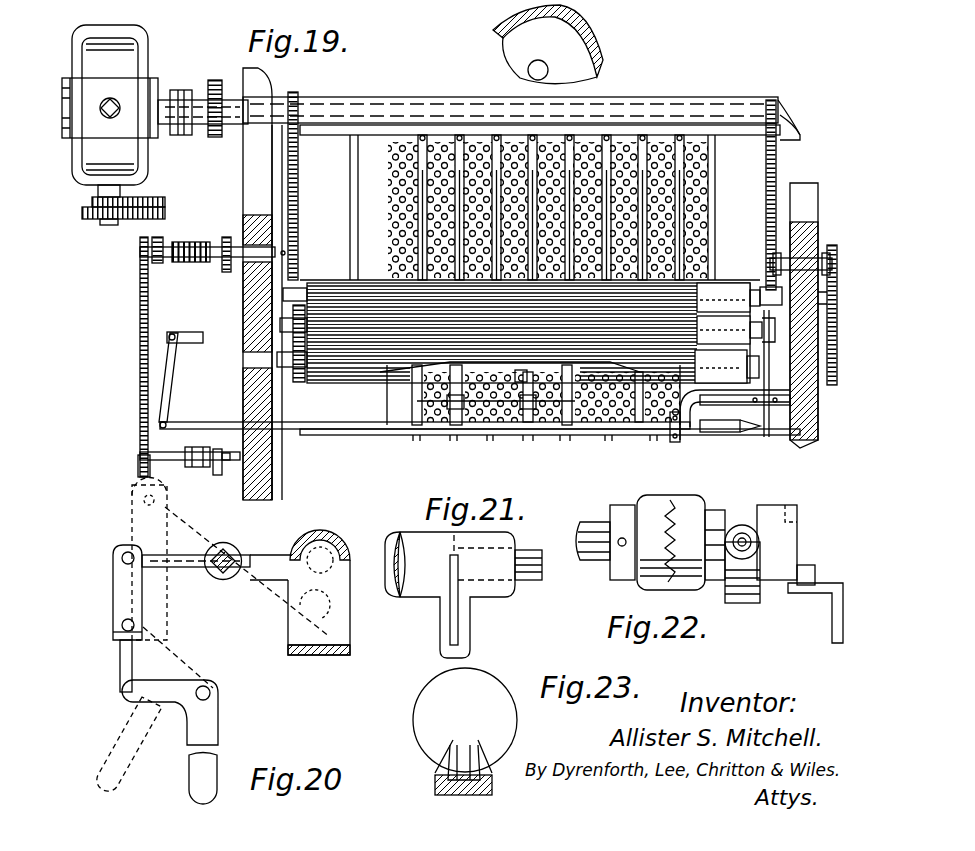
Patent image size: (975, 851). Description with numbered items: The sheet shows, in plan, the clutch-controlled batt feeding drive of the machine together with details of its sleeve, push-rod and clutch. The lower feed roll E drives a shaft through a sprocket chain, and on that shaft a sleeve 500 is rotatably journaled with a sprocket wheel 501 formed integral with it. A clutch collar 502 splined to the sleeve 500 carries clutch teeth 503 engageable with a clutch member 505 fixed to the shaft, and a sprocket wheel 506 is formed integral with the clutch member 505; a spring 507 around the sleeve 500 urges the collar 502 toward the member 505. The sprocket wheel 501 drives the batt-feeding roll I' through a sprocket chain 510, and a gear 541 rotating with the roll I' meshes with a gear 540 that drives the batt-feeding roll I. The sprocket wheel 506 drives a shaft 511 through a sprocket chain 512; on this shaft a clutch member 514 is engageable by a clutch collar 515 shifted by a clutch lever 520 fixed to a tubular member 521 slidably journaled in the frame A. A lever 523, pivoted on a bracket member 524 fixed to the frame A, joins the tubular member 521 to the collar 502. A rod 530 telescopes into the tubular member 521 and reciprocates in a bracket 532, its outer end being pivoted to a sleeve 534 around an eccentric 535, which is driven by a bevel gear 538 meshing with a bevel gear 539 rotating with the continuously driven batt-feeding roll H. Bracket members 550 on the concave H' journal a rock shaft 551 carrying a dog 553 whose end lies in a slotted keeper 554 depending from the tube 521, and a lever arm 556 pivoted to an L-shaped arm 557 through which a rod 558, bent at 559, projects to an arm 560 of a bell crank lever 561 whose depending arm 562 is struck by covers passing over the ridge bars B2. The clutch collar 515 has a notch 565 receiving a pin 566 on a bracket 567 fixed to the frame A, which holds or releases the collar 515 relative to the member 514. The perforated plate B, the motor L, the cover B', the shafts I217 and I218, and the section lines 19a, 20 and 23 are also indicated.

In FIG. 19, the motor L is at (113, 28).
In FIG. 19, the cover B' is at (396, 42).
In FIG. 19, the lower feed roll E is at (340, 99).
In FIG. 19, the ridge bars B2 is at (428, 140).
In FIG. 19, the perforated plate B is at (530, 170).
In FIG. 19, the frame A is at (245, 150).
In FIG. 19, the batt-feeding roll H is at (706, 243).
In FIG. 19, the bevel gear 539 is at (758, 290).
In FIG. 19, the bevel gear 538 is at (760, 330).
In FIG. 19, the sleeve 534 is at (755, 364).
In FIG. 19, the eccentric 535 is at (803, 421).
In FIG. 19, the batt-feeding roll I is at (513, 319).
In FIG. 19, the roll I217 is at (300, 184).
In FIG. 19, the roll I218 is at (300, 226).
In FIG. 19, the batt-feeding roll I' is at (302, 393).
In FIG. 19, the concave H' is at (376, 398).
In FIG. 19, the gear 540 is at (284, 290).
In FIG. 19, the gear 541 is at (305, 330).
In FIG. 19, the spring 507 is at (221, 233).
In FIG. 19, the sleeve 500 is at (213, 245).
In FIG. 19, the clutch member 505 is at (158, 243).
In FIG. 19, the clutch collar 502 is at (145, 250).
In FIG. 19, the sprocket wheel 506 is at (140, 245).
In FIG. 19, the section line 19a is at (140, 250).
In FIG. 19, the clutch teeth 503 is at (148, 285).
In FIG. 19, the sprocket wheel 501 is at (200, 258).
In FIG. 19, the sprocket chain 510 is at (228, 290).
In FIG. 19, the bracket member 524 is at (200, 340).
In FIG. 19, the sprocket chain 512 is at (139, 418).
In FIG. 19, the lever 523 is at (168, 414).
In FIG. 19, the clutch member 514 is at (185, 453).
In FIG. 22, the clutch member 514 is at (640, 578).
In FIG. 19, the shaft 511 is at (140, 470).
In FIG. 22, the shaft 511 is at (615, 552).
In FIG. 19, the clutch collar 515 is at (217, 472).
In FIG. 22, the clutch collar 515 is at (760, 554).
In FIG. 19, the clutch lever 520 is at (350, 436).
In FIG. 19, the pin 566 is at (240, 455).
In FIG. 22, the pin 566 is at (795, 585).
In FIG. 23, the pin 566 is at (443, 748).
In FIG. 19, the bracket members 550 is at (418, 385).
In FIG. 19, the section line 20 is at (447, 365).
In FIG. 19, the tubular member 521 is at (380, 428).
In FIG. 21, the tubular member 521 is at (450, 595).
In FIG. 19, the dog 553 is at (478, 422).
In FIG. 20, the dog 553 is at (262, 557).
In FIG. 21, the dog 553 is at (458, 590).
In FIG. 19, the lever arm 556 is at (530, 412).
In FIG. 20, the lever arm 556 is at (172, 567).
In FIG. 19, the rock shaft 551 is at (570, 435).
In FIG. 19, the rod 530 is at (600, 425).
In FIG. 20, the rod 530 is at (350, 545).
In FIG. 21, the rod 530 is at (545, 548).
In FIG. 22, the rod 530 is at (580, 548).
In FIG. 19, the bracket 532 is at (685, 437).
In FIG. 19, the section line 23 is at (848, 478).
In FIG. 20, the L-shaped arm 557 is at (118, 588).
In FIG. 20, the bent portion 559 is at (122, 625).
In FIG. 20, the rod 558 is at (120, 656).
In FIG. 20, the arm 560 is at (152, 698).
In FIG. 20, the bell crank lever 561 is at (233, 664).
In FIG. 20, the depending arm 562 is at (208, 733).
In FIG. 20, the slotted keeper 554 is at (340, 633).
In FIG. 21, the slotted keeper 554 is at (465, 622).
In FIG. 23, the notch 565 is at (490, 745).
In FIG. 22, the bracket 567 is at (836, 616).
In FIG. 23, the bracket 567 is at (450, 778).